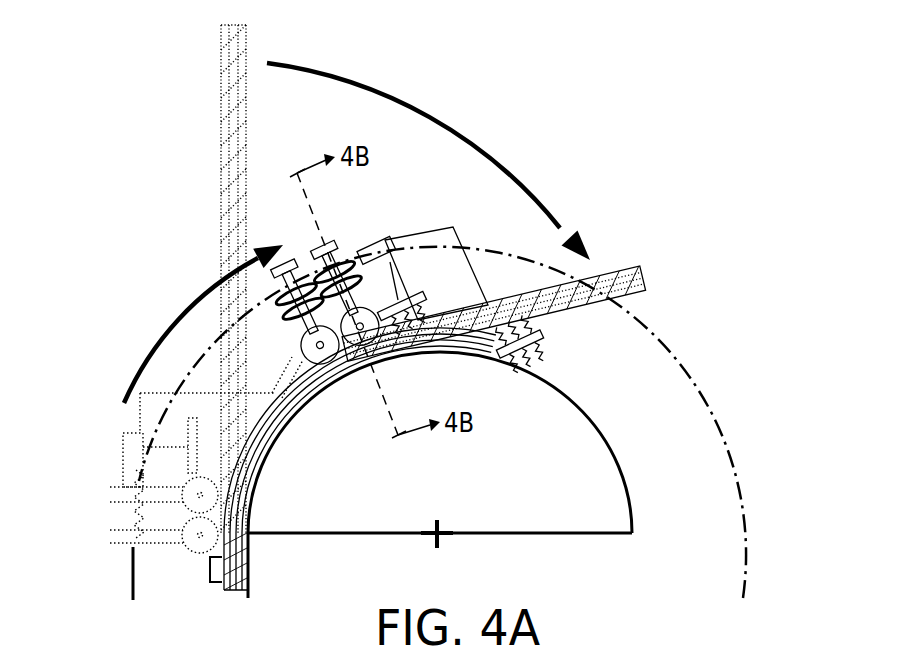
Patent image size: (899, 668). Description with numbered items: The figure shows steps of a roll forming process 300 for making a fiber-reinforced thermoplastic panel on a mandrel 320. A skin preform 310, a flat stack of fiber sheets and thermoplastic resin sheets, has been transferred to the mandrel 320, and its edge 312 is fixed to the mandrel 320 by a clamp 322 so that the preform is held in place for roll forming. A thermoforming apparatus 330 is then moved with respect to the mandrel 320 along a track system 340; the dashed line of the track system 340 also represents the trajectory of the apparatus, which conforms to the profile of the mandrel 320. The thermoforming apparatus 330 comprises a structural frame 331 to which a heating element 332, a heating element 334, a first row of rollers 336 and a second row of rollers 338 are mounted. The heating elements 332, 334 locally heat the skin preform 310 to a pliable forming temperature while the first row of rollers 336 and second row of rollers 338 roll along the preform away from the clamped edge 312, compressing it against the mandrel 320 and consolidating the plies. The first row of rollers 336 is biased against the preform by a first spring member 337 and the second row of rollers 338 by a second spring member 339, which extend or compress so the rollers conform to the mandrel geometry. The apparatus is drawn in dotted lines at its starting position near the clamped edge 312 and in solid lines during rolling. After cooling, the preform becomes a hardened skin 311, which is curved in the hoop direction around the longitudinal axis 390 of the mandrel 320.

The film forming system / forming direction arrow 300 is at (583, 104).
The skin preform 310 is at (220, 92).
The hardened skin 311 is at (267, 447).
The edge 312 is at (233, 592).
The mandrel 320 is at (477, 481).
The clamp 322 is at (209, 571).
The thermoforming apparatus 330 is at (392, 212).
The structural frame 331 is at (370, 240).
The heating element 332 is at (417, 298).
The heating element 334 is at (543, 346).
The first row of rollers 336 is at (373, 340).
The first spring member 337 is at (310, 260).
The second row of rollers 338 is at (337, 352).
The second spring member 339 is at (298, 266).
The track system 340 is at (684, 332).
The longitudinal axis 390 is at (441, 538).